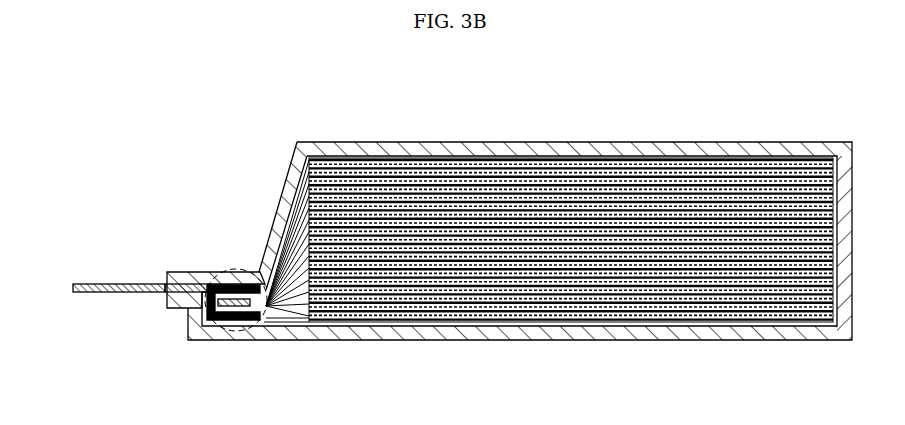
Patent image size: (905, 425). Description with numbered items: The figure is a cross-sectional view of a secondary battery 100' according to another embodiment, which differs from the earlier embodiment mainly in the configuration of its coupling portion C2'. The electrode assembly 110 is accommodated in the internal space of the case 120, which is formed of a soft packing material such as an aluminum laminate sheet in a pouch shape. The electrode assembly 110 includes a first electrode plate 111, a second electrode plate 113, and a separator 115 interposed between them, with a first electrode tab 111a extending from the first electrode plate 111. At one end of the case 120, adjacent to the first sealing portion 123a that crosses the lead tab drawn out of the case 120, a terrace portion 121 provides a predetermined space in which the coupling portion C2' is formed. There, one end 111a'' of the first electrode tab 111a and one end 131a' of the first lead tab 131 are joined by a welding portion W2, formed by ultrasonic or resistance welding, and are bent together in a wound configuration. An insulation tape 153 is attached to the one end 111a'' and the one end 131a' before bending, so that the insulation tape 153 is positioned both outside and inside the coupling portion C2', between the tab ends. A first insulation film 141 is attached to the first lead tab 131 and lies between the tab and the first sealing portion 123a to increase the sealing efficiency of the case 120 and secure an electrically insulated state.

The secondary battery 100' is at (63, 96).
The electrode assembly 110 is at (383, 151).
The first electrode plate 111 is at (518, 162).
The first electrode tab 111a is at (322, 285).
The one end of the first electrode tab 111a'' is at (282, 366).
The second electrode plate 113 is at (675, 162).
The separator 115 is at (600, 162).
The case 120 is at (767, 150).
The terrace portion 121 is at (240, 188).
The first sealing portion 123a is at (233, 283).
The first lead tab 131 is at (112, 283).
The one end of the first lead tab 131a' is at (178, 251).
The first insulation film 141 is at (147, 295).
The insulation tape 153 is at (258, 284).
The coupling portion C2' is at (159, 365).
The welding portion W2 is at (228, 321).